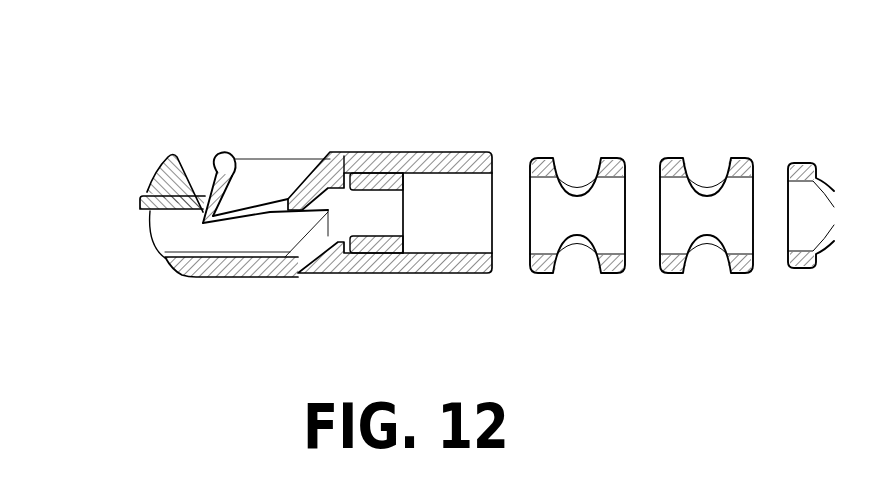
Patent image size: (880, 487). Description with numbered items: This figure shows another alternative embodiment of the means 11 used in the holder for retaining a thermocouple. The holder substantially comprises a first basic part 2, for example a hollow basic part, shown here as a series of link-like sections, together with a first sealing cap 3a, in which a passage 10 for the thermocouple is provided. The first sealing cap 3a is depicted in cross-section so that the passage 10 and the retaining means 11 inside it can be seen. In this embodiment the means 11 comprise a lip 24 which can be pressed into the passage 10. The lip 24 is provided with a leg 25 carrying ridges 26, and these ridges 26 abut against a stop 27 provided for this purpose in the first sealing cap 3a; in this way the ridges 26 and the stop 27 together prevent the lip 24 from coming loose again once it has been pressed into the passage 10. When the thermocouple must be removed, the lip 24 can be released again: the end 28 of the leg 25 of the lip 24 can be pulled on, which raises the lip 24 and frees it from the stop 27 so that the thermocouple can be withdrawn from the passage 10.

The first basic part 2 is at (543, 160).
The first sealing cap 3a is at (302, 74).
The passage 10 is at (233, 238).
The means 11 is at (131, 143).
The lip 24 is at (254, 205).
The leg 25 is at (215, 156).
The ridges 26 is at (140, 200).
The stop 27 is at (203, 212).
The end 28 is at (216, 157).